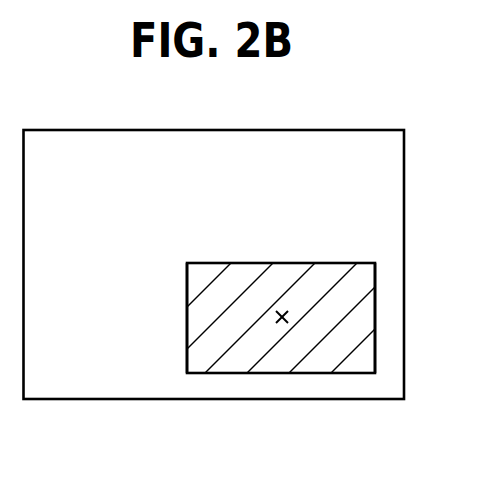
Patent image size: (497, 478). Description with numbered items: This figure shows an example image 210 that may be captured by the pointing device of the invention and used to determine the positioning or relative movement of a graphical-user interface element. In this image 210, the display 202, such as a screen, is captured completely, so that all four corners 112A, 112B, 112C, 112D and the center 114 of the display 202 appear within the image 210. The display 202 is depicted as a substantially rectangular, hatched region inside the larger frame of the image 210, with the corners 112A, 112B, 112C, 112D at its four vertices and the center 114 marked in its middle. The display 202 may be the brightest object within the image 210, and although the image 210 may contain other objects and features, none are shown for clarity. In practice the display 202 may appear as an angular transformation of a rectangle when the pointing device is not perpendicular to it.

The example image 210 is at (239, 166).
The display 202 is at (275, 365).
The center 114 is at (283, 313).
The corner 112A is at (375, 263).
The corner 112B is at (373, 367).
The corner 112C is at (193, 373).
The corner 112D is at (188, 263).